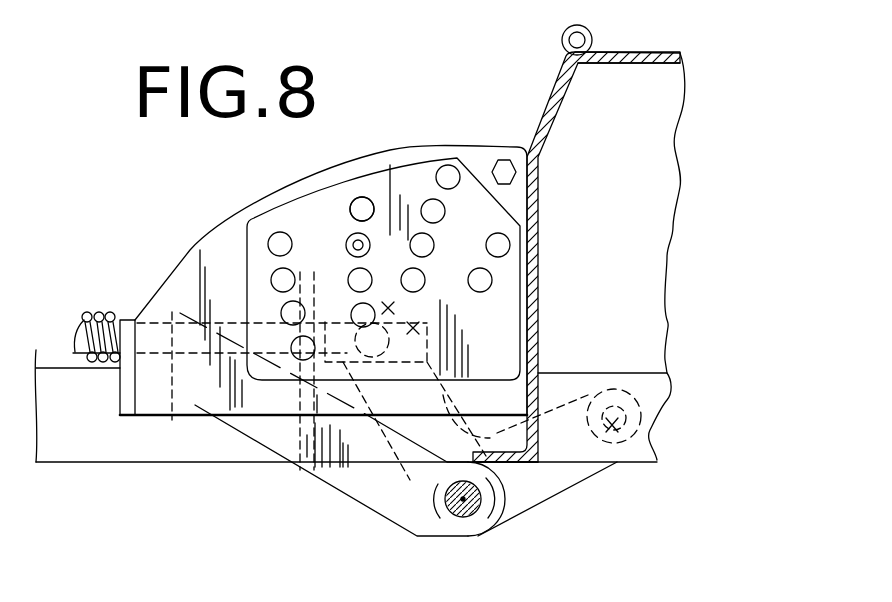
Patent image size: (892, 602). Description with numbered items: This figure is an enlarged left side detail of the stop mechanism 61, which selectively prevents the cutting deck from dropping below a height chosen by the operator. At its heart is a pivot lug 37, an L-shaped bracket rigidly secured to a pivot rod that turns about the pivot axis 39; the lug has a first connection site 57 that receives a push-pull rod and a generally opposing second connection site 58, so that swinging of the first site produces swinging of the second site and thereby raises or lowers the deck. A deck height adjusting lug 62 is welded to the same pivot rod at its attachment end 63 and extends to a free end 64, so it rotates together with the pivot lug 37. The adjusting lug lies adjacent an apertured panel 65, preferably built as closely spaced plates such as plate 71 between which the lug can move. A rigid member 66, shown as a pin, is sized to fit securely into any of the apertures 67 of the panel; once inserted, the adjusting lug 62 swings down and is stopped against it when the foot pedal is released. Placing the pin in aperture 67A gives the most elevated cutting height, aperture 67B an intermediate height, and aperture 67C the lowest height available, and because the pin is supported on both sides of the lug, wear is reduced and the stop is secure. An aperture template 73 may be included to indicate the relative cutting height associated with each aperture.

The pivot lug 37 is at (538, 480).
The pivot axis 39 is at (466, 503).
The first connection site 57 is at (415, 303).
The second connection site 58 is at (617, 440).
The stop mechanism 61 is at (175, 232).
The deck height adjusting lug 62 is at (280, 438).
The attachment end 63 is at (403, 534).
The free end 64 is at (165, 385).
The apertured panel 65 is at (384, 146).
The rigid member 66 is at (358, 243).
The apertures 67 is at (437, 211).
The aperture 67A is at (303, 350).
The aperture 67B is at (363, 208).
The aperture 67C is at (500, 245).
The plate 71 is at (231, 243).
The aperture template 73 is at (500, 330).